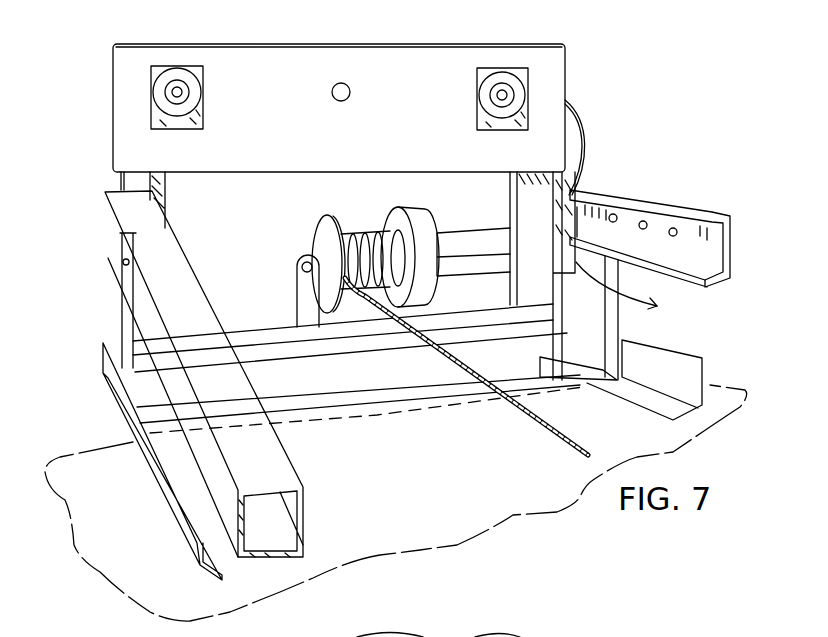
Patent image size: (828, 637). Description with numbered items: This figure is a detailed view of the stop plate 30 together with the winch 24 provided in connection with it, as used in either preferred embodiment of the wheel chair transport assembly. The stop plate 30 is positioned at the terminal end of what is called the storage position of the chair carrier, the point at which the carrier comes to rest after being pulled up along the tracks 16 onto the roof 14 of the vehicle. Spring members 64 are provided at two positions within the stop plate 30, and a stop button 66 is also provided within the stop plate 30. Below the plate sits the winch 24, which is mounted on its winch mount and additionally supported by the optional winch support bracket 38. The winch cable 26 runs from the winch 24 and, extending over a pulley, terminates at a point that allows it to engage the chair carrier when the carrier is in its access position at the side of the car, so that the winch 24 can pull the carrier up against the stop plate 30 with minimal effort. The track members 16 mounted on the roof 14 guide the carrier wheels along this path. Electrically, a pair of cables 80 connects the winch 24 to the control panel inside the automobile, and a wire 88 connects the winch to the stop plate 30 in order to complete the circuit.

The roof 14 is at (398, 489).
The tracks 16 is at (657, 210).
The winch 24 is at (270, 232).
The winch cable 26 is at (530, 415).
The stop plate 30 is at (420, 83).
The winch support bracket 38 is at (300, 298).
The spring members 64 is at (180, 90).
The stop button 66 is at (343, 82).
The cables 80 is at (662, 312).
The wire 88 is at (587, 127).